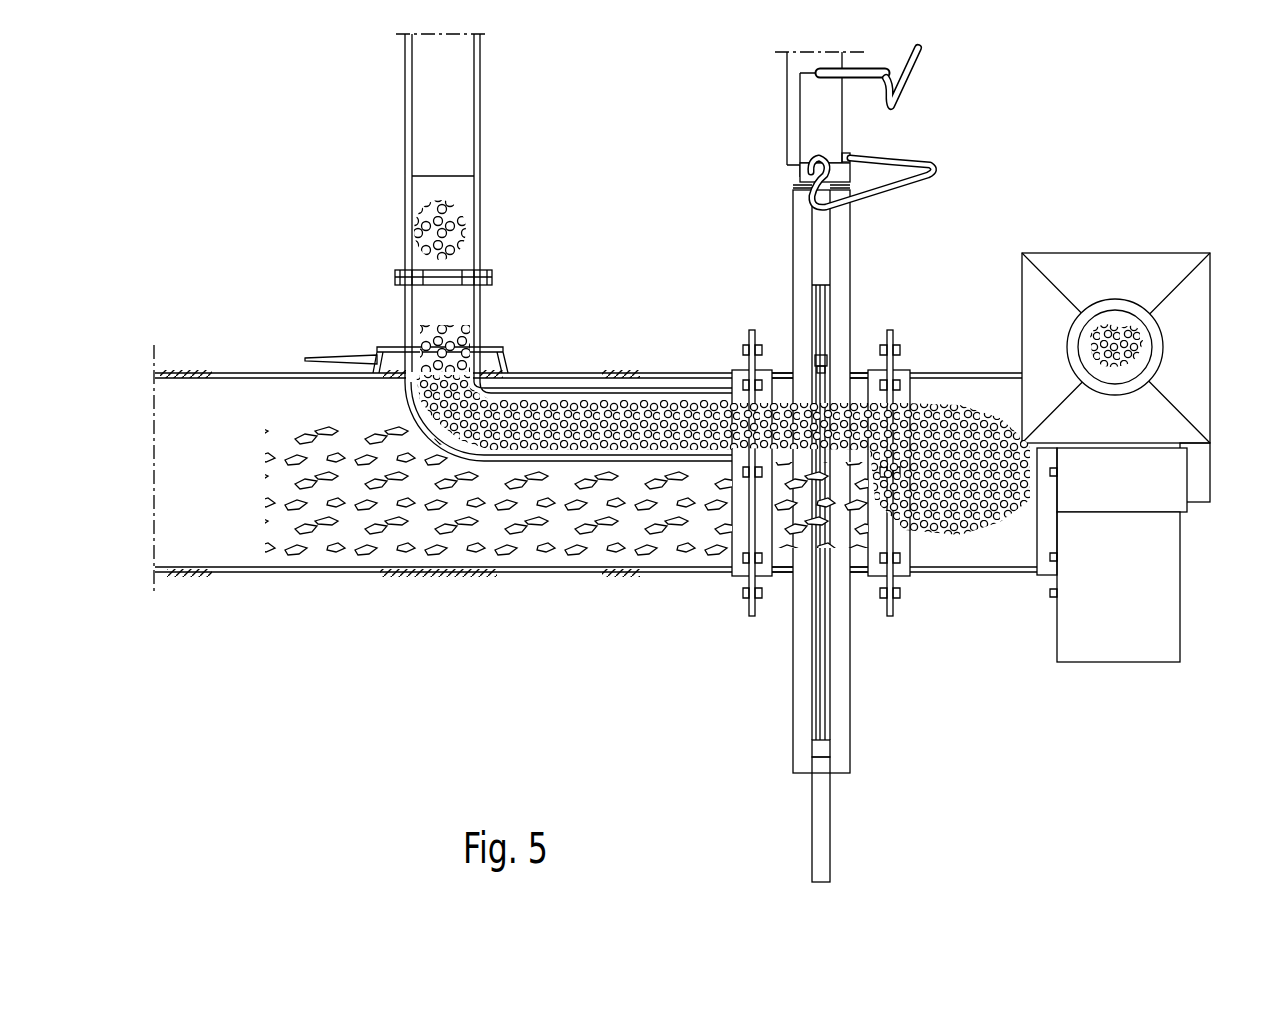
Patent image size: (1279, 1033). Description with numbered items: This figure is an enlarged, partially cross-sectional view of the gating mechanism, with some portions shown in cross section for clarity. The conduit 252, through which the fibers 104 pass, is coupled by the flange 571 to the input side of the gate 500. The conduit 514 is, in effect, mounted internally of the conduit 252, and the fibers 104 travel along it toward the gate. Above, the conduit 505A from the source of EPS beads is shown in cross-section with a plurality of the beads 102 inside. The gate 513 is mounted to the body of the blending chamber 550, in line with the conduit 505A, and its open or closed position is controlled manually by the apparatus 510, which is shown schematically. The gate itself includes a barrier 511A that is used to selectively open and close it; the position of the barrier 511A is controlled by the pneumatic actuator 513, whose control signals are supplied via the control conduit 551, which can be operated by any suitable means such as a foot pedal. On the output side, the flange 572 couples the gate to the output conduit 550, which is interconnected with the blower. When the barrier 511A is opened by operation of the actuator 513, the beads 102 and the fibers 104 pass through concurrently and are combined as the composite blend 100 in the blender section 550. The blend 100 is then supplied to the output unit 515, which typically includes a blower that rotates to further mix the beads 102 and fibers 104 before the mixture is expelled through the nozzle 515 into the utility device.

The composite blend 100 is at (925, 412).
The beads 102 is at (457, 223).
The fibers 104 is at (330, 525).
The conduit 252 is at (224, 372).
The gate 500 is at (657, 200).
The conduit 505A is at (478, 88).
The apparatus 510 is at (318, 362).
The barrier 511A is at (812, 705).
The gate 513 is at (372, 352).
The conduit 514 is at (645, 405).
The output unit 515 is at (1112, 253).
The blender section 550 is at (783, 375).
The control conduit 551 is at (917, 157).
The flange 571 is at (748, 608).
The flange 572 is at (889, 617).